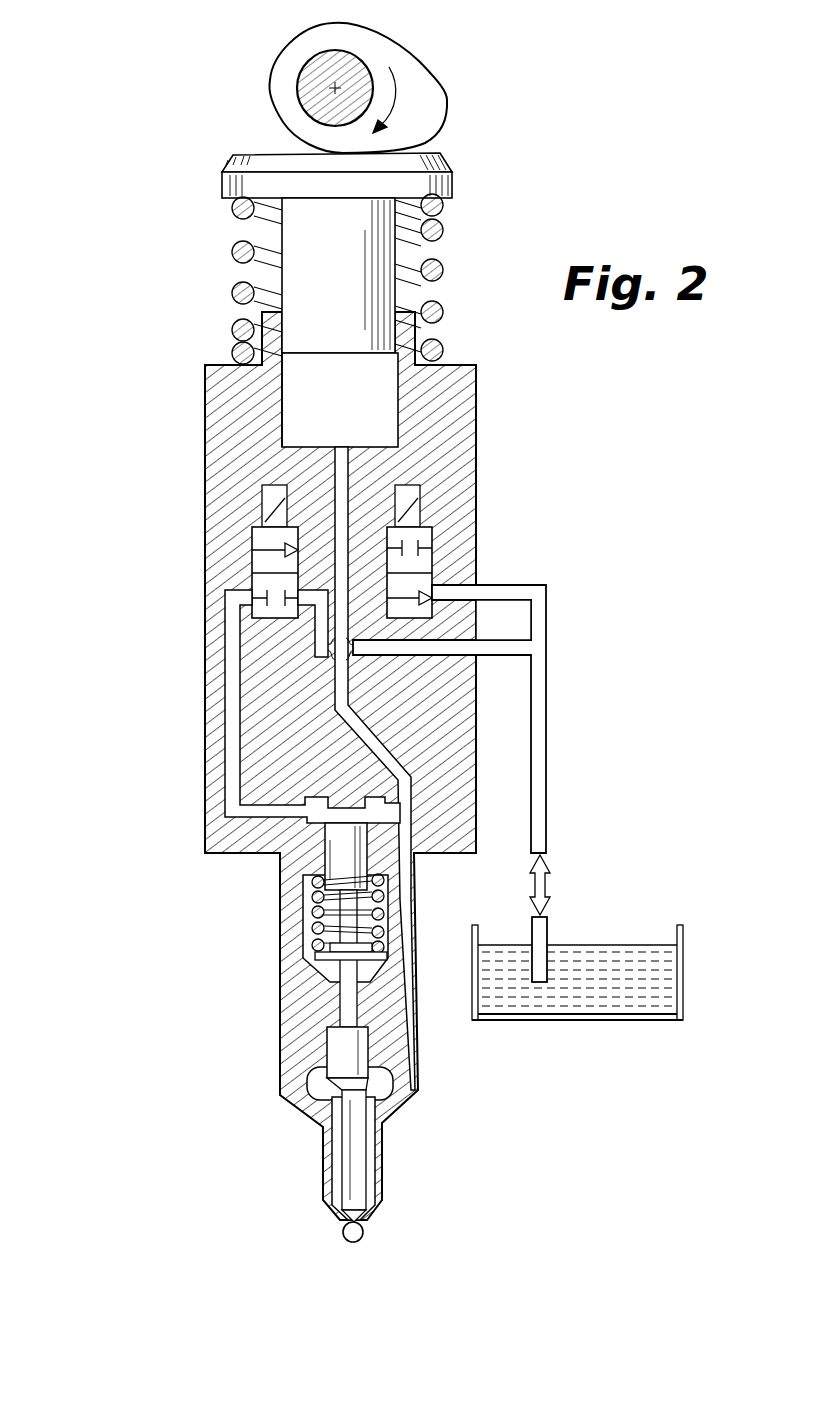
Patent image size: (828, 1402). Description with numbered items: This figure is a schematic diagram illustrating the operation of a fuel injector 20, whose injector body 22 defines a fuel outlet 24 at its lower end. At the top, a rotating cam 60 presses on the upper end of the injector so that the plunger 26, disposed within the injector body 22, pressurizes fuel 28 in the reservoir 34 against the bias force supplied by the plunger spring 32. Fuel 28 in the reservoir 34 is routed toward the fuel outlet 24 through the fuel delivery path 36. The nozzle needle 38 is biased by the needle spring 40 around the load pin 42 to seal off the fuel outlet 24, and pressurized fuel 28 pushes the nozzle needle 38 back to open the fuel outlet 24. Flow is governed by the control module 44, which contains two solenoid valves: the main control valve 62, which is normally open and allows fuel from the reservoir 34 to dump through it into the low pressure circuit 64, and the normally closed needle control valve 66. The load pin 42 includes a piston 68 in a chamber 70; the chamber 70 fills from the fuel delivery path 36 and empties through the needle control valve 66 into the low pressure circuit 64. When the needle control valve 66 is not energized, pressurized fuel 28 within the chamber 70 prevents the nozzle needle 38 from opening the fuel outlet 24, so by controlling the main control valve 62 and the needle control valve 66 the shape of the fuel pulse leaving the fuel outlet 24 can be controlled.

The fuel injector 20 is at (172, 203).
The injector body 22 is at (476, 393).
The fuel outlet 24 is at (350, 1248).
The plunger 26 is at (387, 277).
The fuel 28 is at (353, 412).
The plunger spring 32 is at (440, 318).
The reservoir 34 is at (282, 410).
The fuel delivery path 36 is at (418, 1035).
The nozzle needle 38 is at (330, 1158).
The needle spring 40 is at (320, 910).
The load pin 42 is at (320, 925).
The control module 44 is at (342, 541).
The cam 60 is at (402, 52).
The main control valve 62 is at (437, 475).
The low pressure circuit 64 is at (548, 780).
The needle control valve 66 is at (247, 478).
The piston 68 is at (320, 870).
The chamber 70 is at (345, 815).